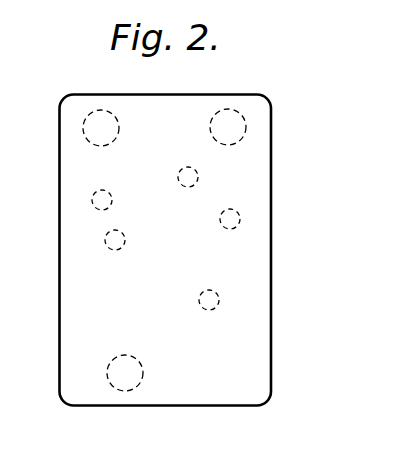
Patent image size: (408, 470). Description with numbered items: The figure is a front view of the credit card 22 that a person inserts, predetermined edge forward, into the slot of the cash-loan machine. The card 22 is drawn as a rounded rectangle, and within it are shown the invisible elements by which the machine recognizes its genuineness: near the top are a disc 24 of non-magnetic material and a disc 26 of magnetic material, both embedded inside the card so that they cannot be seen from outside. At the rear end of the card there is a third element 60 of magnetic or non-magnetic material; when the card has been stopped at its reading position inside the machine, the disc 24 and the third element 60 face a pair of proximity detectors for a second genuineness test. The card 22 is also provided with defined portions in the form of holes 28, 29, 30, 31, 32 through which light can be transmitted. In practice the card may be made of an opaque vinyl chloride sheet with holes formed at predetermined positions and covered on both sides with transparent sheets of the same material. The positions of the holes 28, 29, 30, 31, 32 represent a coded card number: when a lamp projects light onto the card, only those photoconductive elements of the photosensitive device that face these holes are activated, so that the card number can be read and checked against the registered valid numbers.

The credit card 22 is at (260, 380).
The disc of non-magnetic material 24 is at (107, 112).
The disc of magnetic material 26 is at (232, 115).
The hole 28 is at (93, 200).
The hole 29 is at (108, 247).
The hole 30 is at (196, 180).
The hole 31 is at (237, 215).
The hole 32 is at (218, 301).
The third element 60 is at (130, 380).